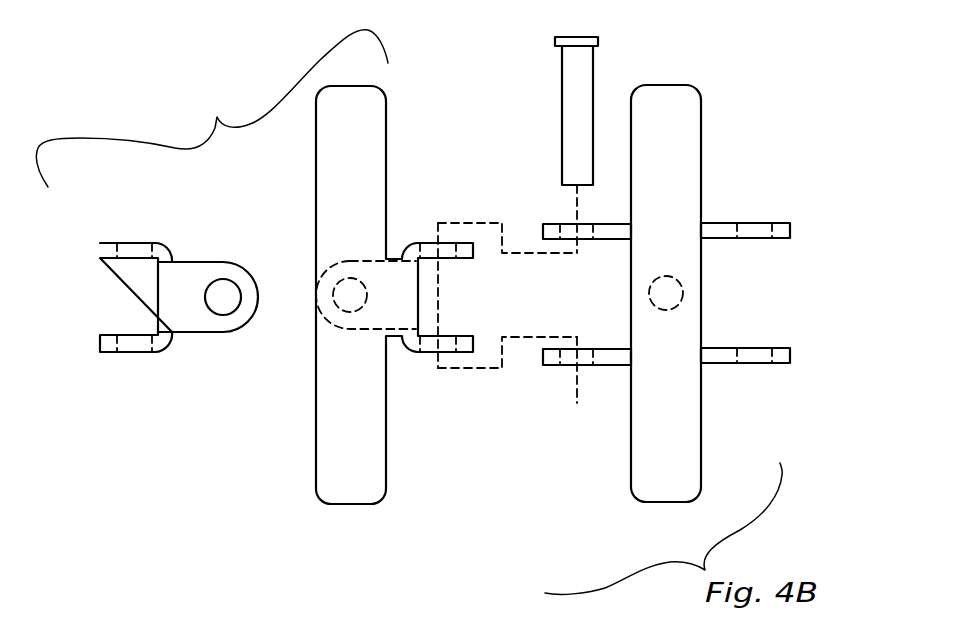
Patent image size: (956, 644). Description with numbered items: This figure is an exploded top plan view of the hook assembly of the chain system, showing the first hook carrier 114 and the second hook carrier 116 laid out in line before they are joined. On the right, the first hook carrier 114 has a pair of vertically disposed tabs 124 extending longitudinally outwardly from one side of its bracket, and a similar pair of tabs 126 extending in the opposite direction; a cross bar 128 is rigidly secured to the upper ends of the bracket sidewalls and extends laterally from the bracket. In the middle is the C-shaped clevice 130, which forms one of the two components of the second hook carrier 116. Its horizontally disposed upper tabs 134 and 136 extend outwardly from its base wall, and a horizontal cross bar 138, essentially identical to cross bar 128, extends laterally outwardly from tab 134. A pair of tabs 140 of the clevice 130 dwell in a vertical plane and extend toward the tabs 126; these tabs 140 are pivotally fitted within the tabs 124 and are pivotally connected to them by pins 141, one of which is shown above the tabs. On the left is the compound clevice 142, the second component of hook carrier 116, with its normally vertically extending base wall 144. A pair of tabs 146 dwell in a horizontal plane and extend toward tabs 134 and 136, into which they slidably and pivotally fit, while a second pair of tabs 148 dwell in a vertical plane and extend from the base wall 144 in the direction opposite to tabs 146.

The first hook carrier 114 is at (658, 269).
The second hook carrier 116 is at (217, 117).
The tabs 124 is at (545, 224).
The tabs 126 is at (780, 223).
The cross bar 128 is at (692, 125).
The C-shaped clevice 130 is at (408, 295).
The upper tab 134 is at (416, 293).
The upper tab 136 is at (314, 270).
The cross bar 138 is at (322, 144).
The tabs 140 is at (468, 242).
The pins 141 is at (567, 90).
The compound clevice 142 is at (217, 331).
The base wall 144 is at (177, 299).
The tabs 146 is at (222, 264).
The tabs 148 is at (108, 243).